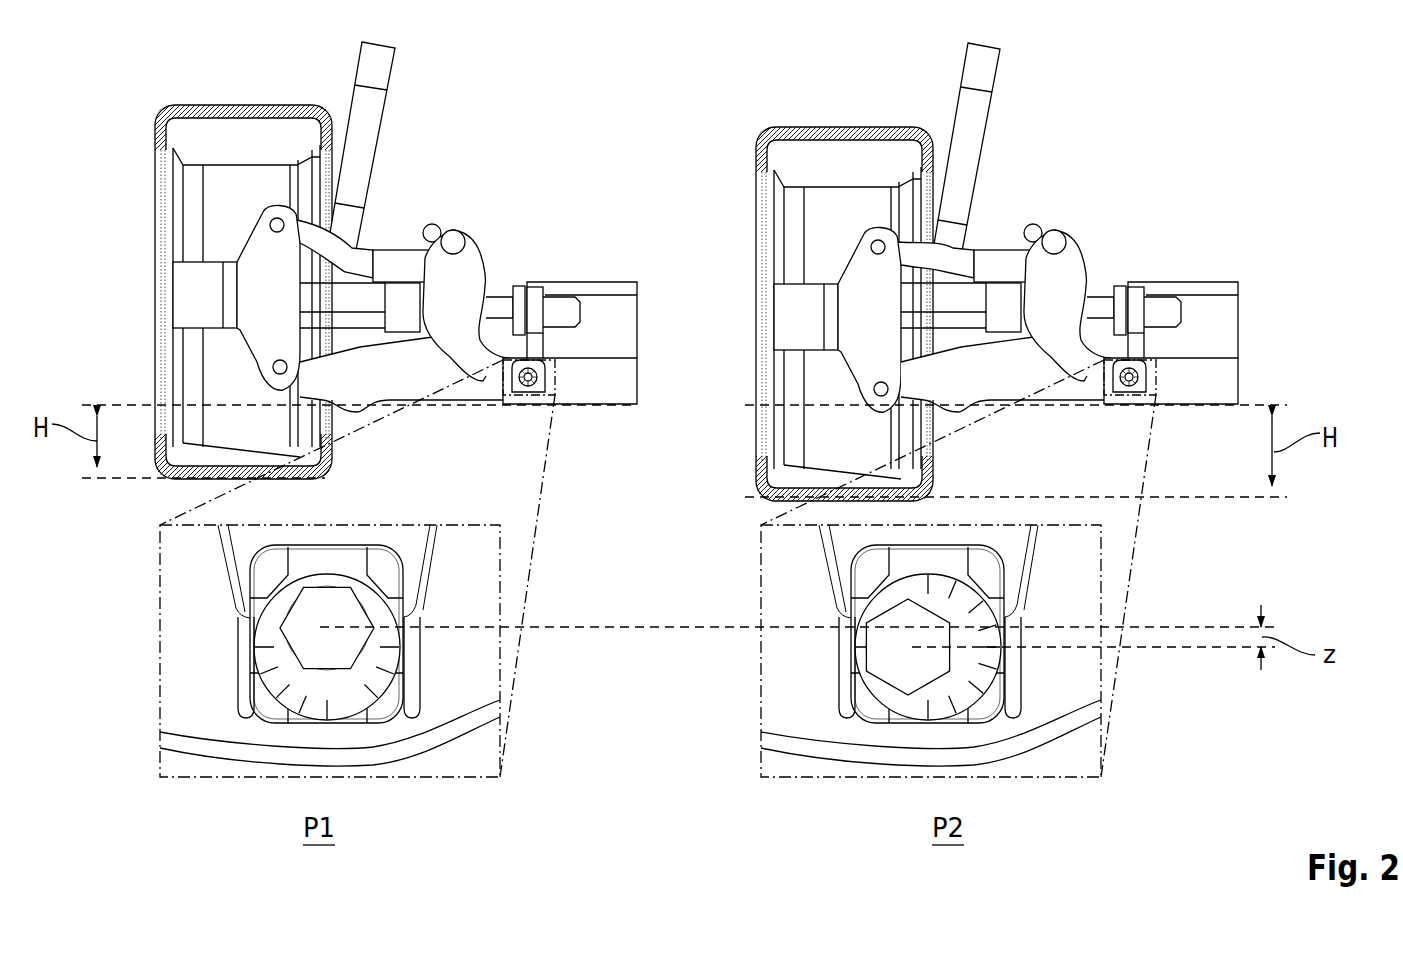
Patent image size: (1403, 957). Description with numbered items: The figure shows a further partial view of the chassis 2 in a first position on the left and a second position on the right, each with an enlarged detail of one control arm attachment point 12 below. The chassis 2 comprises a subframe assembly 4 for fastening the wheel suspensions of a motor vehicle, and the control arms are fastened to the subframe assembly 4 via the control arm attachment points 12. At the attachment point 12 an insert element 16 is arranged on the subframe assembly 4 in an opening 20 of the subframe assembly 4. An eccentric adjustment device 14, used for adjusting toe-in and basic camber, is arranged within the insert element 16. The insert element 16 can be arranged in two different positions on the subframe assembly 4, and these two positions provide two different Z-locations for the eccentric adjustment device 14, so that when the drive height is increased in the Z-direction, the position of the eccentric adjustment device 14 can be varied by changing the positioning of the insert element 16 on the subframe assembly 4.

The chassis 2 is at (572, 477).
The subframe assembly 4 is at (482, 678).
The control arm attachment point 12 is at (133, 598).
The eccentric adjustment device 14 is at (322, 652).
The insert element 16 is at (350, 565).
The opening 20 is at (236, 684).